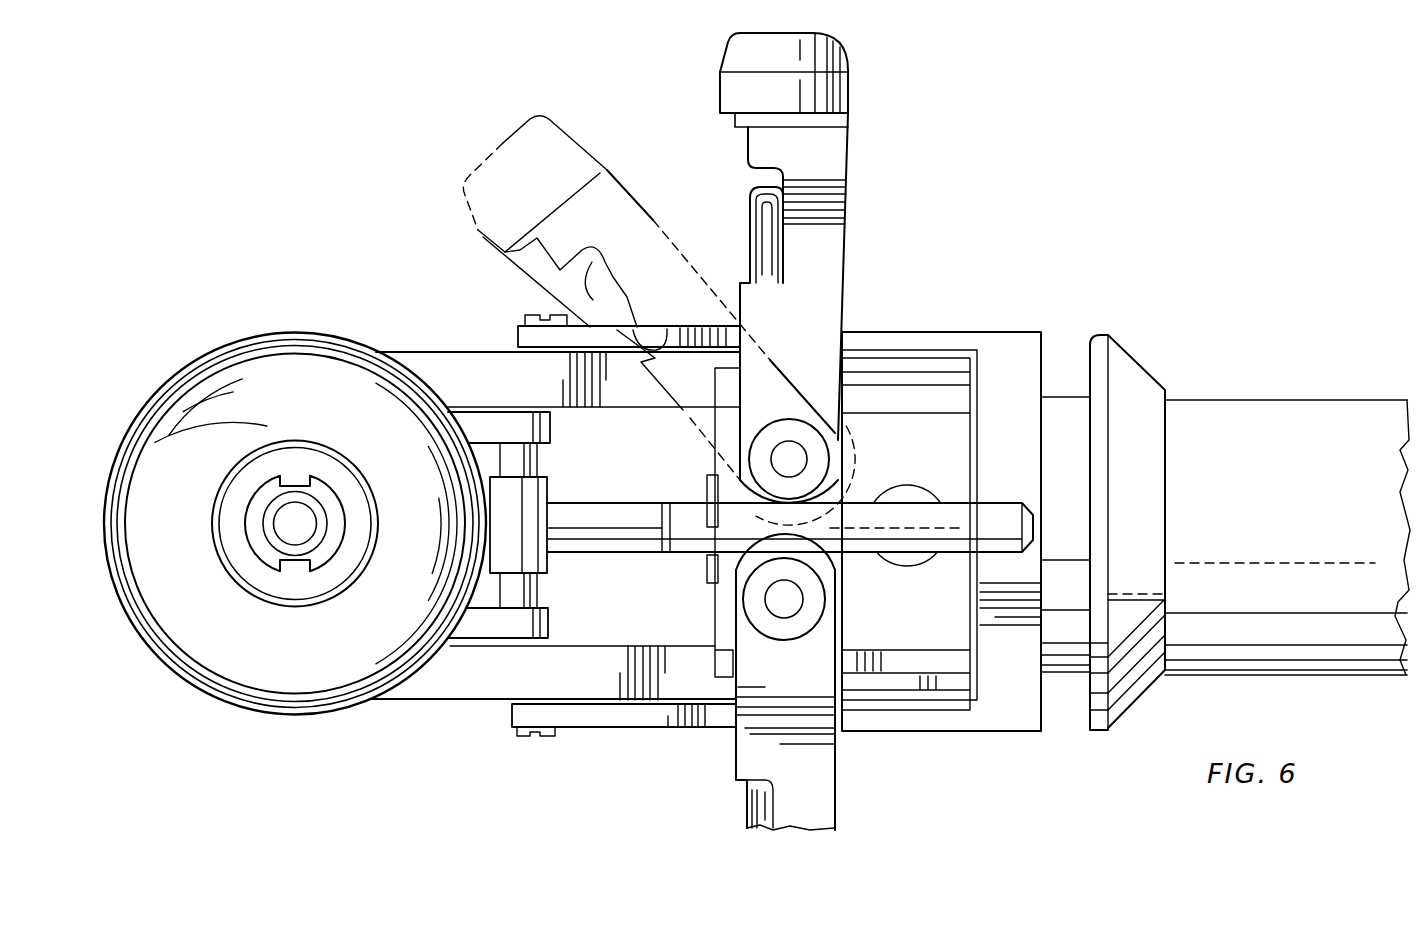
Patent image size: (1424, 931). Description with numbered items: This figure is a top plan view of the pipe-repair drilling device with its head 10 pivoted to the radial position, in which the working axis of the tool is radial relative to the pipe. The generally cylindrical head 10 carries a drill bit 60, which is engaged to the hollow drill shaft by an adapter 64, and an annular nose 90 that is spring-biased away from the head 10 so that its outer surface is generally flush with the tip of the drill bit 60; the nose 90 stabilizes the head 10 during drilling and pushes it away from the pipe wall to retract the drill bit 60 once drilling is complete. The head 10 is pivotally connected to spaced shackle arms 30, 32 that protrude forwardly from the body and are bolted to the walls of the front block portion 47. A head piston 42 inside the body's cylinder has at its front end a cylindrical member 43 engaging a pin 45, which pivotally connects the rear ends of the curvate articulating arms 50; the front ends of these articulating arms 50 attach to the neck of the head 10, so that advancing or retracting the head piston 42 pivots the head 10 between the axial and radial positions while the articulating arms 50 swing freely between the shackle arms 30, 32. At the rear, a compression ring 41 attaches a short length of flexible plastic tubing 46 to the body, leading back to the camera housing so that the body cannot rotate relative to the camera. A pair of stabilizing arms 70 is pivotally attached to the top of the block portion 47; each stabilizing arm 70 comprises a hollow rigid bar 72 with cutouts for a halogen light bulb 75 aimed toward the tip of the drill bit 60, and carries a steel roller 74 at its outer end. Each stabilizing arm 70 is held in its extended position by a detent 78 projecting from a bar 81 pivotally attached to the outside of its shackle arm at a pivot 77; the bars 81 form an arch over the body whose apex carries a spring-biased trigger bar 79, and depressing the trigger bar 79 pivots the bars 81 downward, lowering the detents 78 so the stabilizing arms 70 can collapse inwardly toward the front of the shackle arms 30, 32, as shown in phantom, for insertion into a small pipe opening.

The head 10 is at (243, 303).
The shackle arm 30 is at (478, 388).
The shackle arm 32 is at (495, 685).
The compression ring 41 is at (1137, 360).
The head piston 42 is at (651, 493).
The cylindrical member 43 is at (545, 558).
The pin 45 is at (538, 450).
The flexible plastic tubing 46 is at (1240, 438).
The front block portion 47 is at (910, 450).
The articulating arms 50 is at (477, 425).
The drill bit 60 is at (298, 528).
The adapter 64 is at (247, 537).
The stabilizing arm 70 is at (895, 172).
The hollow rigid bar 72 is at (822, 250).
The steel roller 74 is at (838, 62).
The halogen light bulb 75 is at (592, 300).
The pivot point of bar 77 is at (535, 315).
The detent 78 is at (635, 327).
The trigger bar 79 is at (907, 513).
The bar 81 is at (483, 237).
The annular nose 90 is at (240, 647).